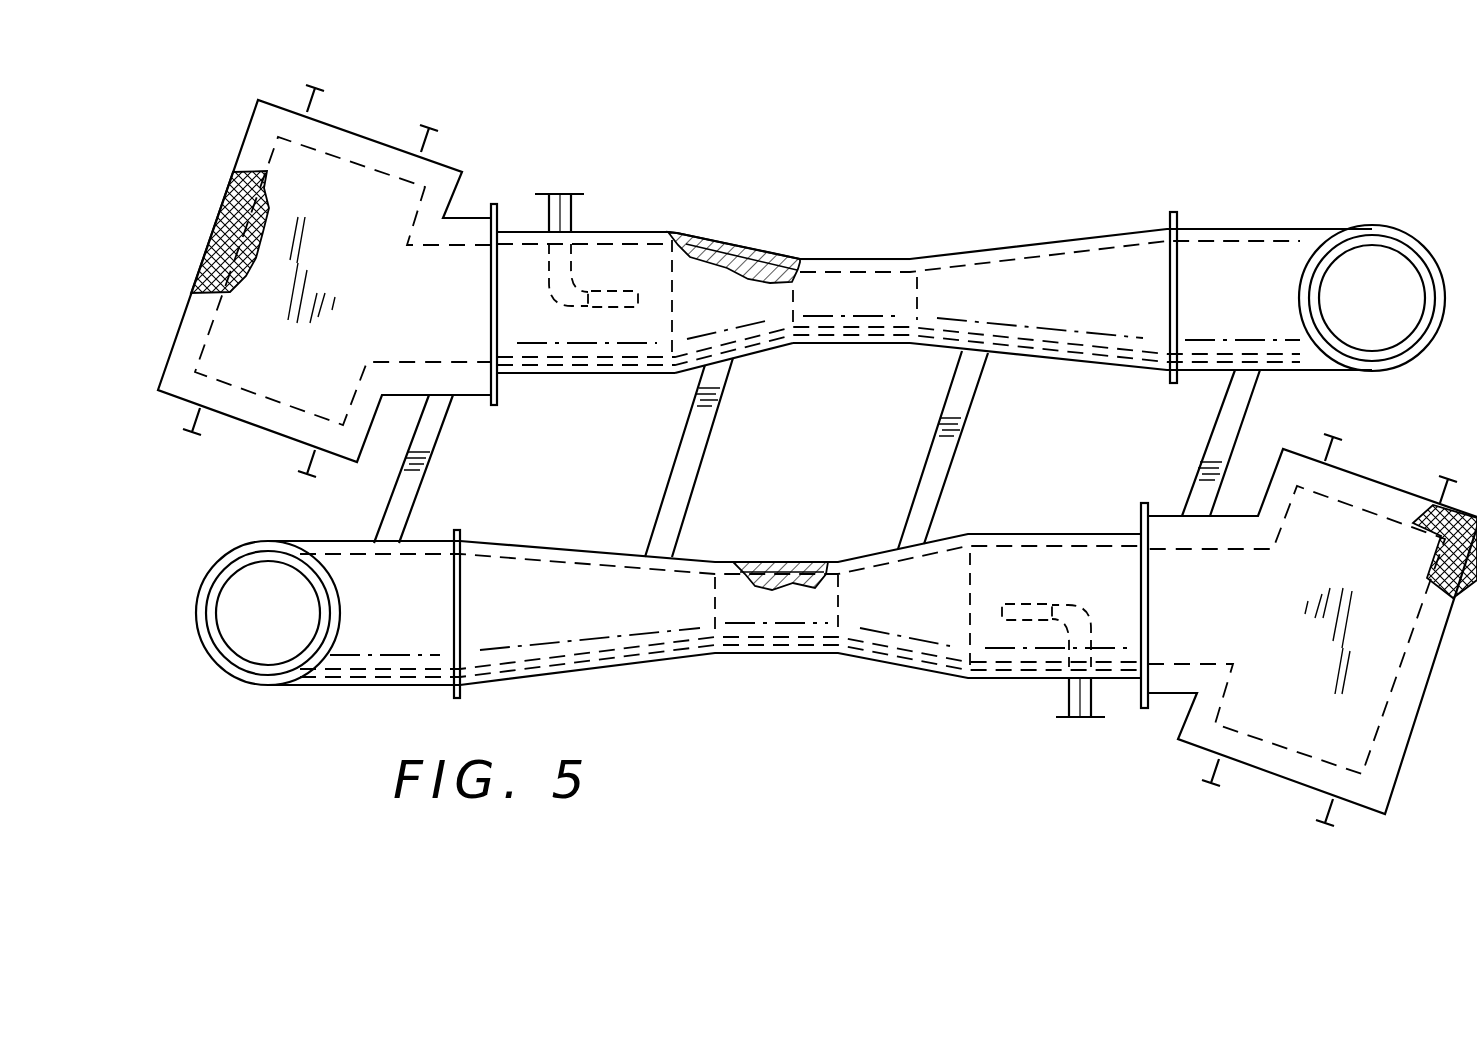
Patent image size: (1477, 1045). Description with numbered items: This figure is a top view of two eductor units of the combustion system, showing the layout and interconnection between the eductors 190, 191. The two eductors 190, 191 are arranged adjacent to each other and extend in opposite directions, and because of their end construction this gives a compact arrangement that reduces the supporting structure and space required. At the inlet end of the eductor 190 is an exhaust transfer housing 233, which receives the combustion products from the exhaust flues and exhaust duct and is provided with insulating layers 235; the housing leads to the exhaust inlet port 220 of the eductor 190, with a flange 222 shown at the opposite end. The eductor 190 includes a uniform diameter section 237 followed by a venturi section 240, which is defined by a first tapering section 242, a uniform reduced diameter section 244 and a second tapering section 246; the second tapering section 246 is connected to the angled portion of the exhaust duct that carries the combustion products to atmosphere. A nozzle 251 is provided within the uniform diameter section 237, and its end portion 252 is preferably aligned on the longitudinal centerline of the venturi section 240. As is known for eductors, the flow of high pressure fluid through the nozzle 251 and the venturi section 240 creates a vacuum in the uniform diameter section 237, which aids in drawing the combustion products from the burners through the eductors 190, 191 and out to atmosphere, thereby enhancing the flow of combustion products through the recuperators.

The eductor 190 is at (1072, 223).
The eductor 191 is at (830, 660).
The exhaust inlet port 220 is at (498, 352).
The outlet flange 222 is at (1178, 270).
The exhaust transfer housing 233 is at (367, 130).
The insulating layers 235 is at (217, 244).
The uniform diameter section 237 is at (597, 374).
The venturi section 240 is at (845, 257).
The first tapering section 242 is at (759, 355).
The uniform reduced diameter section 244 is at (849, 346).
The second tapering section 246 is at (1046, 359).
The nozzle 251 is at (572, 214).
The end portion 252 is at (680, 321).